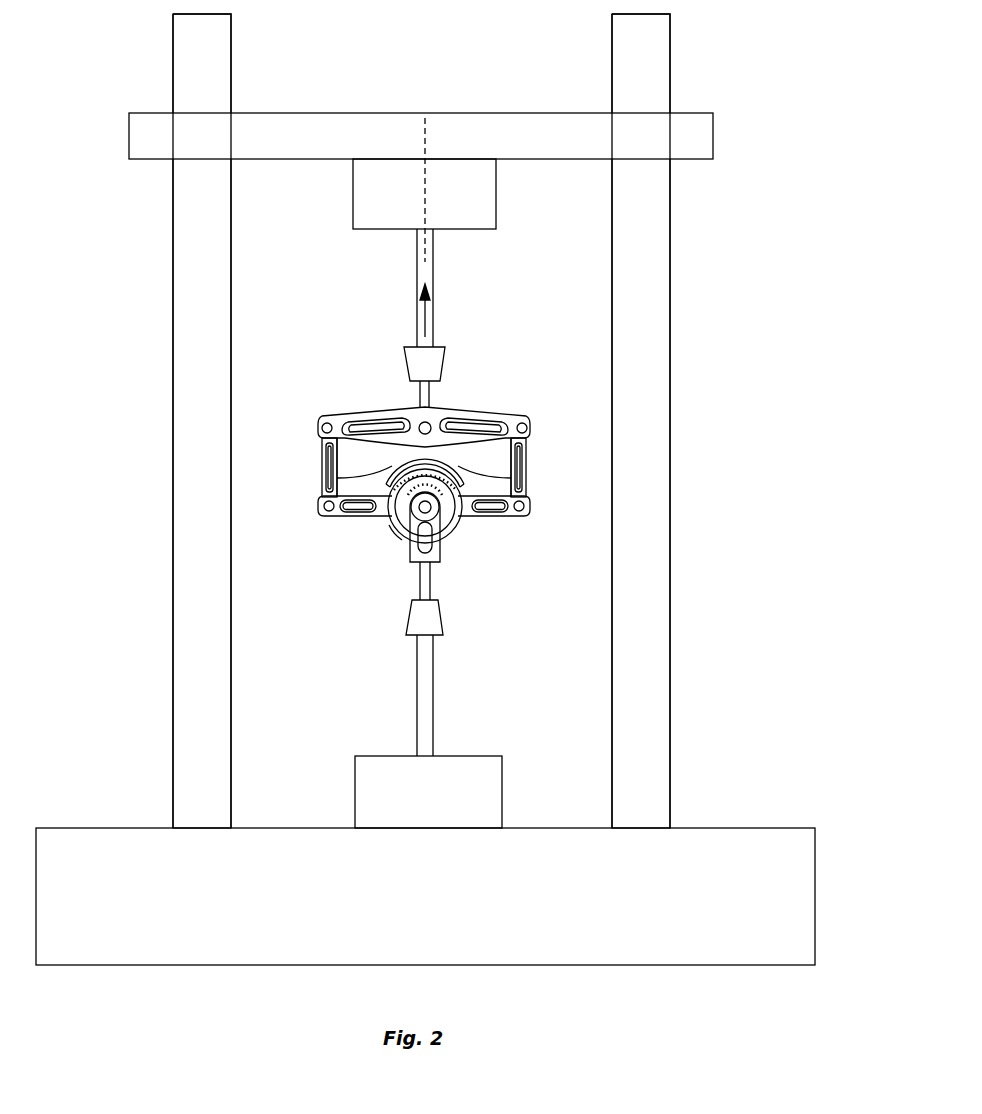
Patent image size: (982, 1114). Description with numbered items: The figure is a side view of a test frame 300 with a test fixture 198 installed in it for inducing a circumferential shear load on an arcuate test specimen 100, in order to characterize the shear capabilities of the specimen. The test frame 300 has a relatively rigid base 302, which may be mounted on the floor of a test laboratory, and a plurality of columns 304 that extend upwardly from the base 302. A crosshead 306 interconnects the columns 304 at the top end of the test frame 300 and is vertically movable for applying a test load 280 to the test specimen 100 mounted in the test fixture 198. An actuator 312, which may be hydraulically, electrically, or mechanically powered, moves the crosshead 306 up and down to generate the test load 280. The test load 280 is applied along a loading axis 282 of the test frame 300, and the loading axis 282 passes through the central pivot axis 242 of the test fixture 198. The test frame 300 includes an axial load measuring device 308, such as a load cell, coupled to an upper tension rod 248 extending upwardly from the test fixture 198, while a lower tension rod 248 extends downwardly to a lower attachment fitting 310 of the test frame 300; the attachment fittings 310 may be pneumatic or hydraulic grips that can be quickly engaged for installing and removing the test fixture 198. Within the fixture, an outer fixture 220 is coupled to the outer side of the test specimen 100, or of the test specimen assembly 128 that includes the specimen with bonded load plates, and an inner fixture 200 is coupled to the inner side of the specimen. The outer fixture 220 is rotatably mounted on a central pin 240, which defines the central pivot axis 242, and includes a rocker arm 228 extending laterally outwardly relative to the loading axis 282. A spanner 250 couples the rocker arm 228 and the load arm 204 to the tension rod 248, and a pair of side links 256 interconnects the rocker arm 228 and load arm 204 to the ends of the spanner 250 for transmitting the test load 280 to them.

The test specimen 100 is at (455, 478).
The test specimen assembly 128 is at (436, 465).
The test fixture 198 is at (385, 534).
The inner fixture 200 is at (457, 510).
The load arm 204 is at (503, 517).
The outer fixture 220 is at (382, 517).
The rocker arm 228 is at (322, 515).
The central pin 240 is at (412, 515).
The central pivot axis 242 is at (433, 513).
The tension rod 248 is at (430, 393).
The spanner 250 is at (380, 420).
The side link 256 is at (320, 460).
The test load 280 is at (425, 317).
The loading axis 282 is at (422, 245).
The test frame 300 is at (671, 47).
The base 302 is at (815, 880).
The column 304 is at (172, 680).
The crosshead 306 is at (713, 132).
The axial load measuring device 308 is at (496, 229).
The attachment fitting 310 is at (445, 355).
The actuator 312 is at (428, 826).